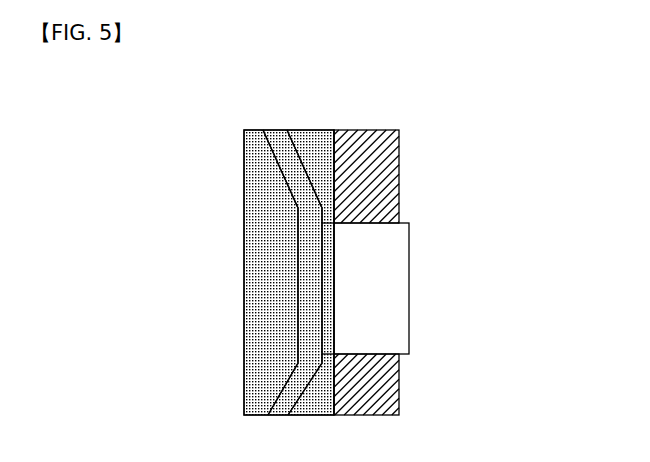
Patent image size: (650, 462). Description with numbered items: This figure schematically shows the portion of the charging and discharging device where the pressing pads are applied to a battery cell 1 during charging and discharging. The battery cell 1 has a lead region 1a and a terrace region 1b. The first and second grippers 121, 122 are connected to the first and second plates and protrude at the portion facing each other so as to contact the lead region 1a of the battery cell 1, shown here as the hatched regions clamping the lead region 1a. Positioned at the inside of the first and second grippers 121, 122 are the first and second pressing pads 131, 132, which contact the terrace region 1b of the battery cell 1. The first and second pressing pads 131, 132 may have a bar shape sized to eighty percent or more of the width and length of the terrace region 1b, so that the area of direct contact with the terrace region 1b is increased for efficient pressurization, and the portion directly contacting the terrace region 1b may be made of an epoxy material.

The battery cell 1 is at (385, 274).
The lead region 1a is at (409, 288).
The terrace region 1b is at (286, 288).
The first gripper 121 is at (399, 157).
The second gripper 122 is at (399, 157).
The first pressing pad 131 is at (245, 178).
The second pressing pad 132 is at (245, 178).